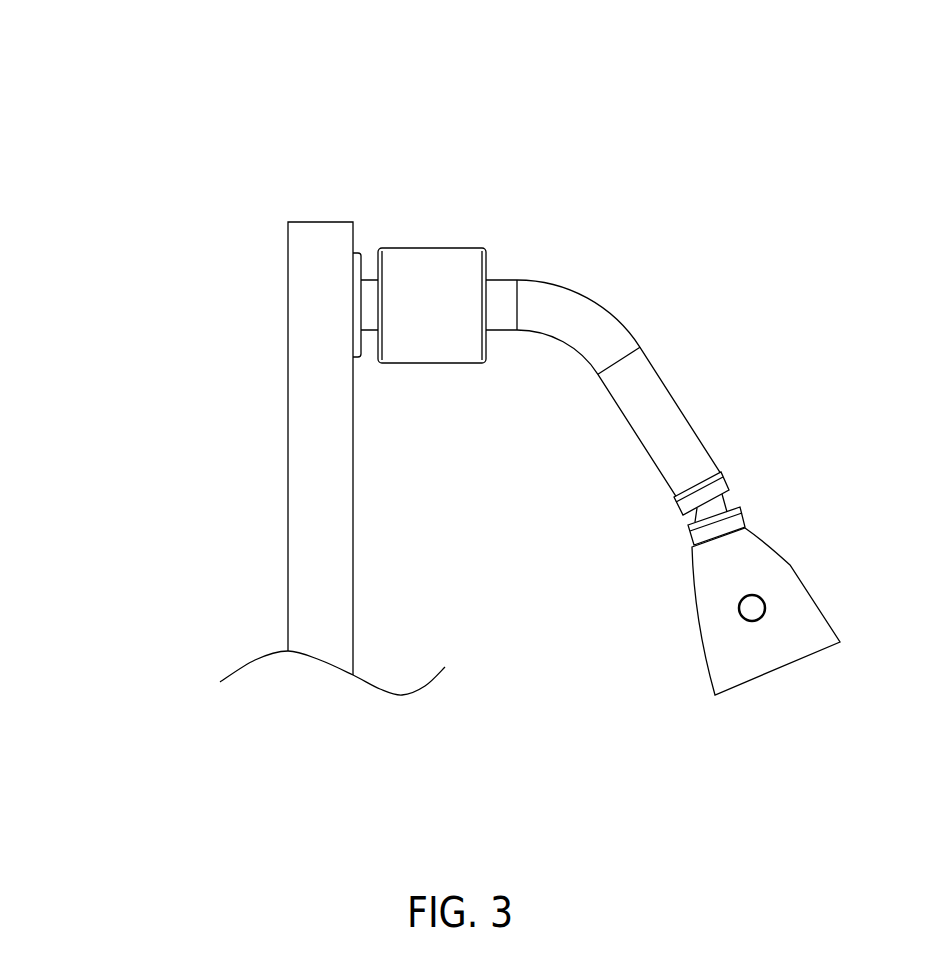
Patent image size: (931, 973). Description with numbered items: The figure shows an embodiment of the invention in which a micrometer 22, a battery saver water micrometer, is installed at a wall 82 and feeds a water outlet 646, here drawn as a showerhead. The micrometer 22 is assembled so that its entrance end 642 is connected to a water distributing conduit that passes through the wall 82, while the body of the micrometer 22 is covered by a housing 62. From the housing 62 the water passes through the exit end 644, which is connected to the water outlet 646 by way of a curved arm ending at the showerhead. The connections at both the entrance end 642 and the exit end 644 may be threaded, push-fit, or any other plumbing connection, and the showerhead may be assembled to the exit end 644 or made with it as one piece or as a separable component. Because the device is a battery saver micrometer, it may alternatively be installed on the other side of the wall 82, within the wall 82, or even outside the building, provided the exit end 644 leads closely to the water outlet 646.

The micrometer 22 is at (433, 172).
The housing 62 is at (429, 324).
The wall 82 is at (320, 532).
The entrance end 642 is at (368, 307).
The exit end 644 is at (507, 313).
The water outlet 646 is at (788, 575).